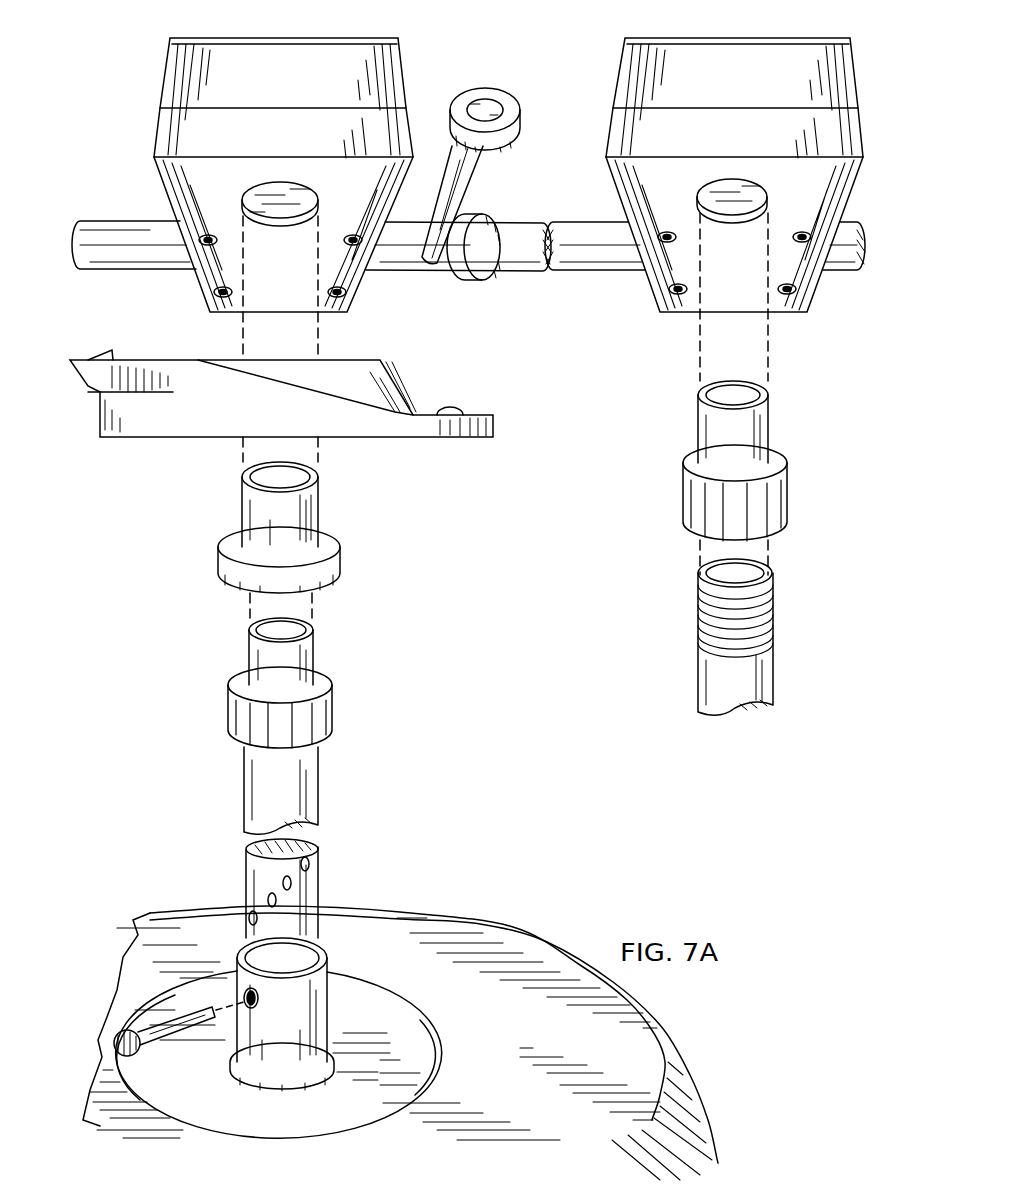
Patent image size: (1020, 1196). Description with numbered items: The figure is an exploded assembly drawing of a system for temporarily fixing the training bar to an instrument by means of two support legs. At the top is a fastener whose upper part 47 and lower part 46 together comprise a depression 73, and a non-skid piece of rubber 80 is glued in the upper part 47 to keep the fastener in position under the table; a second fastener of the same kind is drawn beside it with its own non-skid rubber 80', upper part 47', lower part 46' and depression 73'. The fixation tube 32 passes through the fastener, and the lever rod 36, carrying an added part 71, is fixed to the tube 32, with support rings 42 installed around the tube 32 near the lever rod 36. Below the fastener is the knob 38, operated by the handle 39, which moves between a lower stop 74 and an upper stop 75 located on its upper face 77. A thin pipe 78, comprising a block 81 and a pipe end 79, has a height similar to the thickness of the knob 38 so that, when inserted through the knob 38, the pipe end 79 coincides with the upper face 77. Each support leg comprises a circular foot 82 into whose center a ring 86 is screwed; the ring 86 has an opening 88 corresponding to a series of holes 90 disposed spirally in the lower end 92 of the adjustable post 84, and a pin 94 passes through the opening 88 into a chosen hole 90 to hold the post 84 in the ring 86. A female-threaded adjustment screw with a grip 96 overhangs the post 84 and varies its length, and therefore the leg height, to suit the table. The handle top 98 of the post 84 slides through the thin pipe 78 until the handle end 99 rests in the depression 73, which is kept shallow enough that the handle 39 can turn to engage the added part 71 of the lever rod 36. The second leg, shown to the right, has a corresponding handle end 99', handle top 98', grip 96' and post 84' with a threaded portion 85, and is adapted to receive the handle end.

The non-skid piece of rubber 80 is at (286, 156).
The upper part 47 is at (306, 93).
The lower part 46 is at (263, 204).
The depression 73 is at (324, 400).
The fixation tube 32 is at (118, 233).
The added part 71 is at (465, 92).
The lever rod 36 is at (470, 190).
The support rings 42 is at (485, 216).
The upper stop 75 is at (108, 350).
The knob 38 is at (212, 405).
The handle 39 is at (105, 378).
The upper face 77 is at (330, 358).
The lower stop 74 is at (455, 405).
The pipe end 79 is at (243, 468).
The thin pipe 78 is at (280, 520).
The block 81 is at (340, 562).
The handle end 99 is at (241, 618).
The handle top 98 is at (321, 646).
The grip 96 is at (316, 707).
The adjustable post 84 is at (325, 790).
The lower end 92 is at (300, 910).
The holes 90 is at (310, 865).
The ring 86 is at (325, 990).
The opening 88 is at (251, 998).
The pin 94 is at (180, 1025).
The foot 82 is at (455, 940).
The frame block assembly (alternate) 80' is at (709, 156).
The upper housing portion (alternate) 47' is at (712, 96).
The tapered support portion (alternate) 46' is at (709, 202).
The pivot disc (alternate) 73' is at (803, 373).
The tube opening (alternate) 99' is at (703, 385).
The intermediate tube (alternate) 98' is at (703, 429).
The coupling nut (alternate) 96' is at (711, 493).
The threaded portion 85 is at (715, 618).
The post tube (alternate) 84' is at (704, 637).